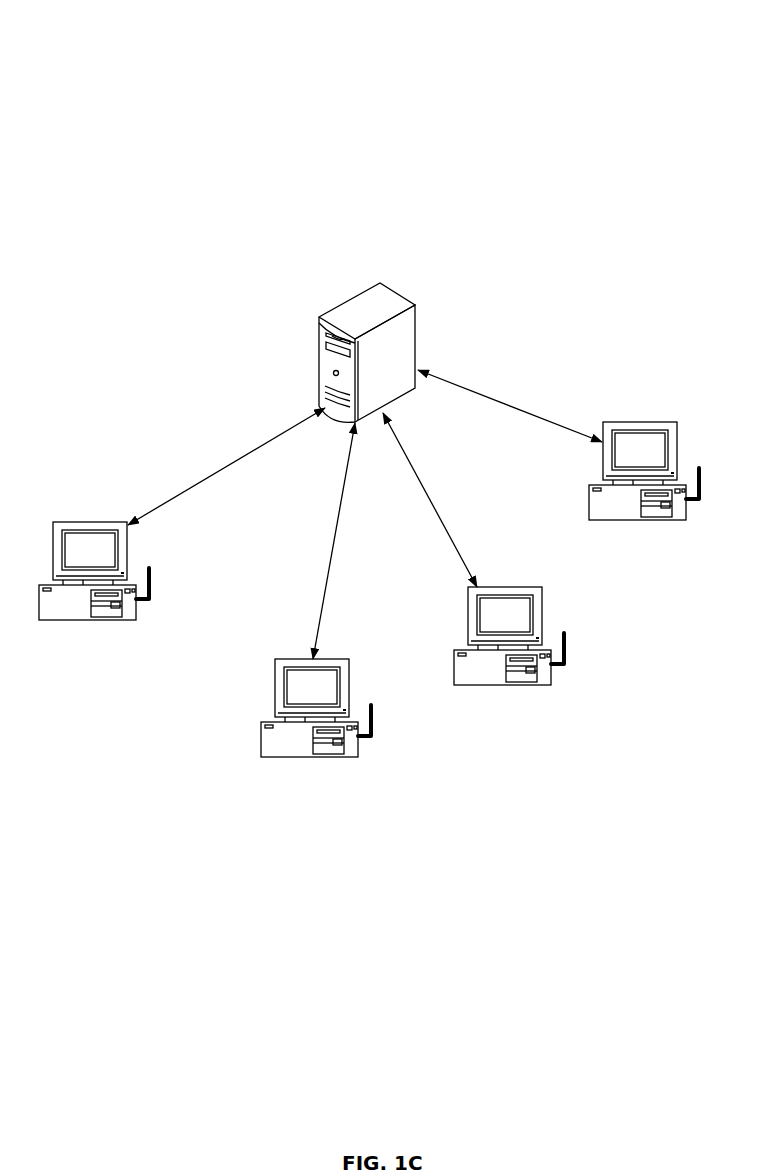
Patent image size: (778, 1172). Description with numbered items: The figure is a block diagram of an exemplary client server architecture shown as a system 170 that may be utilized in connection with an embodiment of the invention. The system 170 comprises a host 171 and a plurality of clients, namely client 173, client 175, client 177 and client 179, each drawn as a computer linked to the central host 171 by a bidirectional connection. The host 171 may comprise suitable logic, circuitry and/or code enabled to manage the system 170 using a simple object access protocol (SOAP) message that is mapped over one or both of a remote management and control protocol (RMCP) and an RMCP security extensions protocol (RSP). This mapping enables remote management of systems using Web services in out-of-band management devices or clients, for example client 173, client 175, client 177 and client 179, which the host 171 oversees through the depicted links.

The system 170 is at (134, 106).
The host 171 is at (381, 283).
The client 173 is at (643, 422).
The client 175 is at (505, 587).
The client 177 is at (285, 659).
The client 179 is at (78, 522).